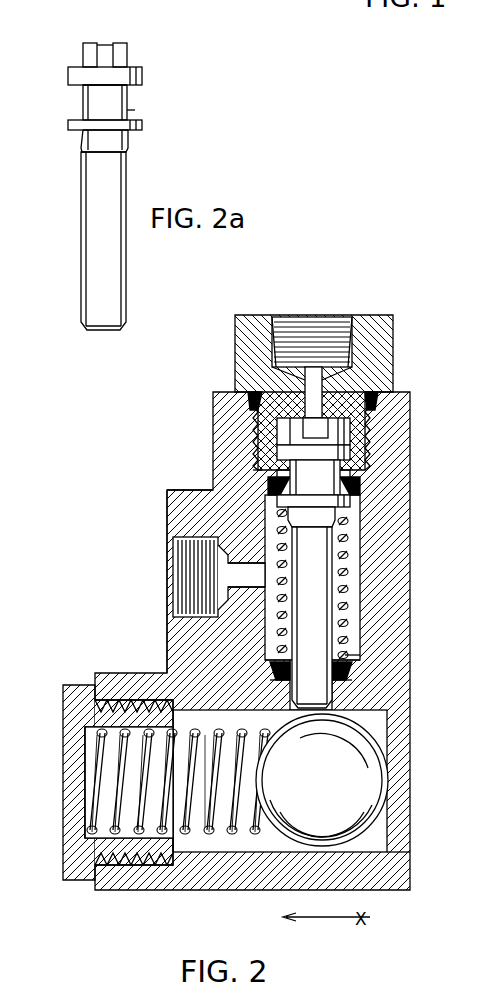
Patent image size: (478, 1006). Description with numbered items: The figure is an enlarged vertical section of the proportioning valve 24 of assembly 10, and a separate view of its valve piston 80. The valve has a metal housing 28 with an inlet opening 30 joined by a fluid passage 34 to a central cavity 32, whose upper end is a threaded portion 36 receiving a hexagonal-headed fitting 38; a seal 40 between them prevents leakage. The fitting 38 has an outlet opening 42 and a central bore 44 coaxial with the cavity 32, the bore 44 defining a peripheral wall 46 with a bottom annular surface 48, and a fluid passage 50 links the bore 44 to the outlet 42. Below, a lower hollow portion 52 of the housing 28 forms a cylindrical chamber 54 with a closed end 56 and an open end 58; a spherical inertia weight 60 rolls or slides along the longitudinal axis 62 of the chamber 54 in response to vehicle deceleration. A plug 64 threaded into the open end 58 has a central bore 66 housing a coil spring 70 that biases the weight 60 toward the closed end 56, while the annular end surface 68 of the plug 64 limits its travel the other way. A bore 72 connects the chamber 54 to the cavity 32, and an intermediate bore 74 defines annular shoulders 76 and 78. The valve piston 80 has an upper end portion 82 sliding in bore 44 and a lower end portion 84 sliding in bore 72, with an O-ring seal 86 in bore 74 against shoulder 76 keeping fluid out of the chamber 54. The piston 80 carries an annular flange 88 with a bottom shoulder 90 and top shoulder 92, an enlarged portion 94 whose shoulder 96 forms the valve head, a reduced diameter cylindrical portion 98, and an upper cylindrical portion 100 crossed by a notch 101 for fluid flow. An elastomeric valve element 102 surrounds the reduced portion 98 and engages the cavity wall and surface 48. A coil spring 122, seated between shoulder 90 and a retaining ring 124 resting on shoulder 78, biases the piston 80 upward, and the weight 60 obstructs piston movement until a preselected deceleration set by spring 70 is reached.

In FIG. 2, the valve assembly 10 is at (467, 151).
In FIG. 2, the proportioning valve 24 is at (98, 514).
In FIG. 2, the housing 28 is at (184, 490).
In FIG. 2, the inlet opening 30 is at (178, 612).
In FIG. 2, the central cavity 32 is at (360, 553).
In FIG. 2, the fluid passage 34 is at (252, 566).
In FIG. 2, the threaded portion 36 is at (370, 446).
In FIG. 2, the fitting 38 is at (393, 342).
In FIG. 2, the seal 40 is at (372, 392).
In FIG. 2, the outlet opening 42 is at (347, 325).
In FIG. 2, the central bore 44 is at (348, 481).
In FIG. 2, the peripheral wall 46 is at (256, 430).
In FIG. 2, the bottom annular surface 48 is at (262, 466).
In FIG. 2, the fluid passage 50 is at (304, 394).
In FIG. 2, the lower hollow portion 52 is at (400, 814).
In FIG. 2, the chamber 54 is at (280, 796).
In FIG. 2, the closed end 56 is at (382, 842).
In FIG. 2, the open end 58 is at (123, 862).
In FIG. 2, the inertia weight 60 is at (329, 796).
In FIG. 2, the longitudinal axis 62 is at (237, 780).
In FIG. 2, the plug 64 is at (66, 862).
In FIG. 2, the central bore 66 is at (92, 817).
In FIG. 2, the annular end surface 68 is at (168, 846).
In FIG. 2, the coil spring 70 is at (205, 832).
In FIG. 2, the bore 72 is at (360, 712).
In FIG. 2, the bore 74 is at (270, 676).
In FIG. 2, the annular shoulder 76 is at (355, 690).
In FIG. 2, the annular shoulder 78 is at (355, 675).
In FIG. 2a, the valve piston 80 is at (101, 168).
In FIG. 2, the valve piston 80 is at (327, 612).
In FIG. 2a, the upper end portion 82 is at (120, 43).
In FIG. 2a, the lower end portion 84 is at (110, 295).
In FIG. 2, the O-ring seal 86 is at (280, 683).
In FIG. 2a, the annular flange 88 is at (142, 125).
In FIG. 2a, the annular shoulder 90 is at (135, 133).
In FIG. 2a, the annular shoulder 92 is at (135, 110).
In FIG. 2a, the enlarged portion 94 is at (68, 76).
In FIG. 2a, the annular shoulder 96 is at (76, 87).
In FIG. 2a, the reduced diameter cylindrical portion 98 is at (80, 108).
In FIG. 2a, the upper cylindrical portion 100 is at (127, 52).
In FIG. 2a, the notch 101 is at (105, 44).
In FIG. 2, the elastomeric valve element 102 is at (352, 495).
In FIG. 2, the coil spring 122 is at (348, 590).
In FIG. 2, the retaining ring 124 is at (345, 655).